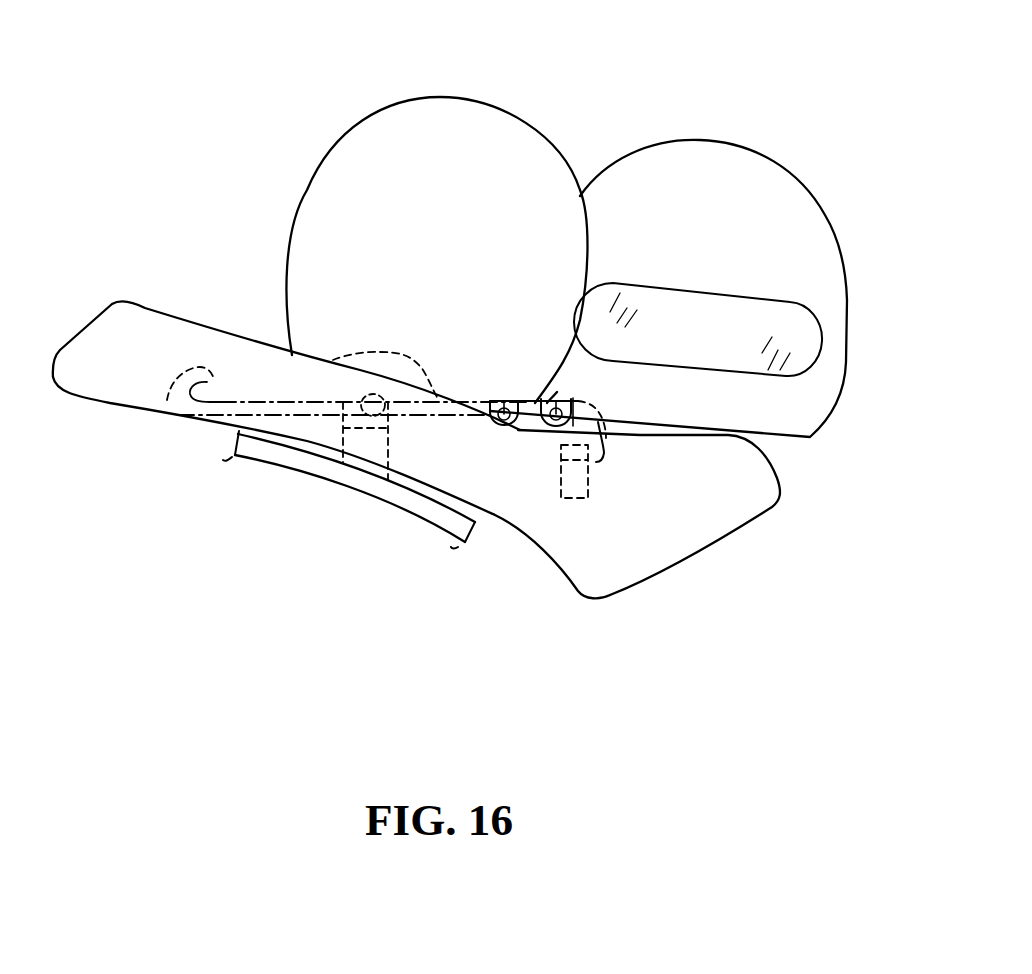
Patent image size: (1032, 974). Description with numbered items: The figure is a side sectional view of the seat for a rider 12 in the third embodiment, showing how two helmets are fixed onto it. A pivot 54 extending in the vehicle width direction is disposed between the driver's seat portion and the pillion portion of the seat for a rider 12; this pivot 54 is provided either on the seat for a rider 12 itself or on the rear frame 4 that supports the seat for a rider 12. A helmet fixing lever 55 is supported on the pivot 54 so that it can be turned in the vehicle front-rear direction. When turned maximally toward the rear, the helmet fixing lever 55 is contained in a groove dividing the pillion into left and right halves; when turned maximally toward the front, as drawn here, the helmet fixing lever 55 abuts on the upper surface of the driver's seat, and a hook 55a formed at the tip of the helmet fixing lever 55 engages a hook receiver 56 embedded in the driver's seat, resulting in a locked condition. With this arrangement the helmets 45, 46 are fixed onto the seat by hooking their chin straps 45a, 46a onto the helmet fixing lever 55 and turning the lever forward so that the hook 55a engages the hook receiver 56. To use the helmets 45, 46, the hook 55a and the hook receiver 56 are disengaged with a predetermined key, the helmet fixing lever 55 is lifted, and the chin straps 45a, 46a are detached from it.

The rear frame 4 is at (425, 520).
The seat for a rider 12 is at (777, 473).
The helmet 45 is at (703, 175).
The chin strap 45a is at (552, 437).
The helmet 46 is at (353, 218).
The chin strap 46a is at (522, 430).
The pivot 54 is at (368, 417).
The helmet fixing lever 55 is at (228, 402).
The hook 55a is at (603, 440).
The hook receiver 56 is at (574, 498).